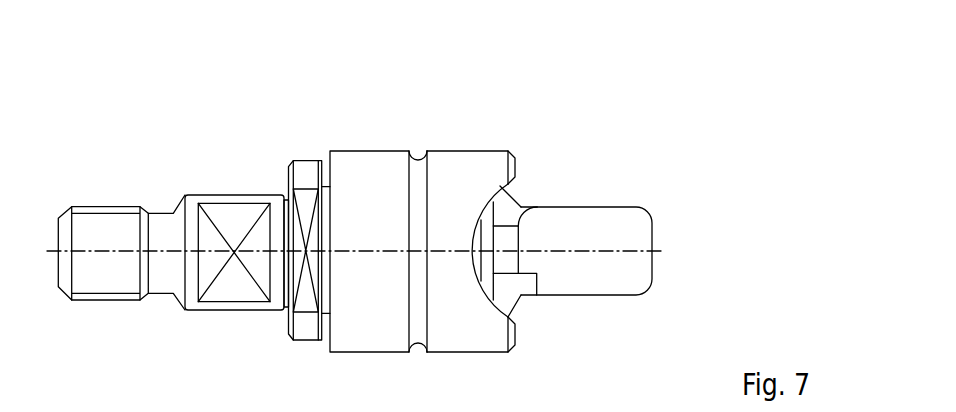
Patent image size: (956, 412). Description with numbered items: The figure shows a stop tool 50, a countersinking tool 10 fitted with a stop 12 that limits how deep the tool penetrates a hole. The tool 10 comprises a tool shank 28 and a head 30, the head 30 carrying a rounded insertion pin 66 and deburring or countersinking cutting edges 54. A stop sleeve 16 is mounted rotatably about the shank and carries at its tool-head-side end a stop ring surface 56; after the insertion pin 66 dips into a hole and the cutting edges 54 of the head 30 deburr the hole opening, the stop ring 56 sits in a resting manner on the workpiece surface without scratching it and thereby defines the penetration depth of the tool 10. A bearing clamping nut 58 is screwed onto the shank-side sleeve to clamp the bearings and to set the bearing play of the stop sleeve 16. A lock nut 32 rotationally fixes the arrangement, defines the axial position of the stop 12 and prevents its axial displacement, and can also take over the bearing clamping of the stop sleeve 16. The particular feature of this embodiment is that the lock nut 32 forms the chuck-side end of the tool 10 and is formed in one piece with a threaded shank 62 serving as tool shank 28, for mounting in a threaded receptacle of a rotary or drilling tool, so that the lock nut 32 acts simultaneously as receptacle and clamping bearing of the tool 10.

The countersinking tool 10 is at (642, 190).
The stop 12 is at (475, 125).
The stop sleeve 16 is at (393, 150).
The tool shank 28 is at (98, 211).
The head 30 is at (522, 297).
The lock nut 32 is at (234, 200).
The stop tool 50 is at (775, 197).
The cutting edges 54 is at (521, 205).
The stop ring surface 56 is at (517, 168).
The bearing clamping nut 58 is at (307, 172).
The threaded shank 62 is at (128, 215).
The insertion pin 66 is at (640, 272).